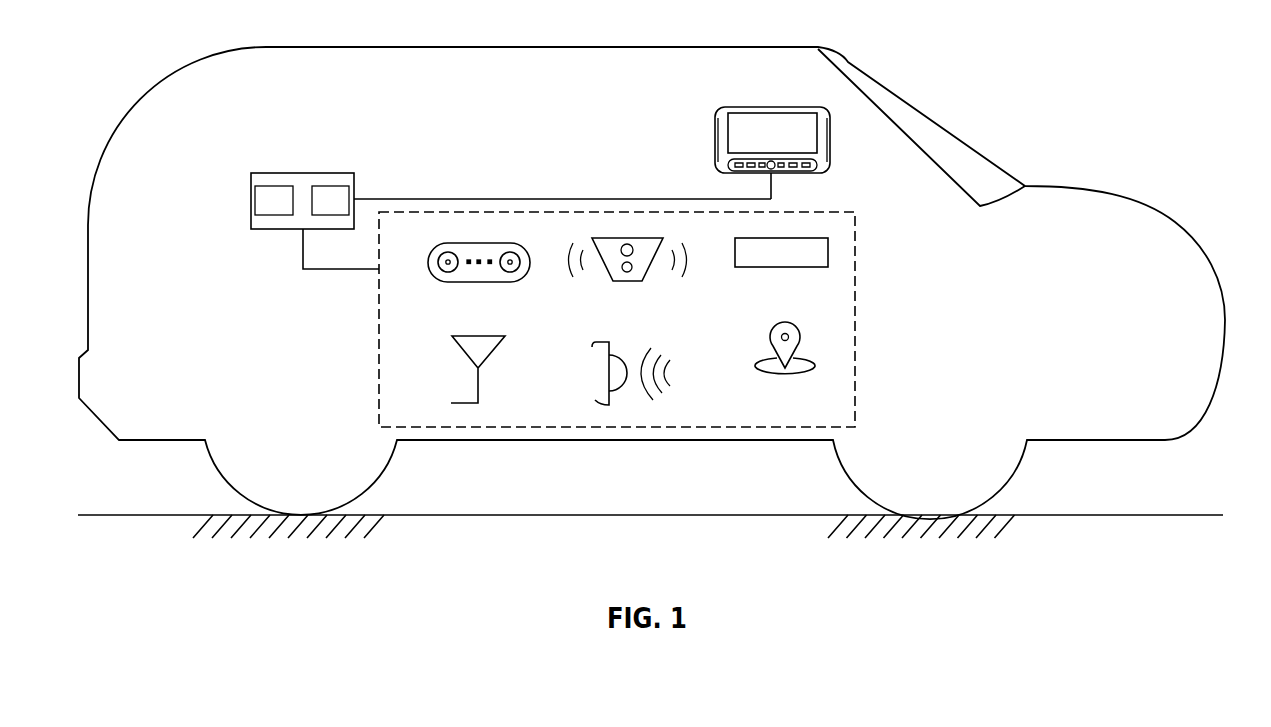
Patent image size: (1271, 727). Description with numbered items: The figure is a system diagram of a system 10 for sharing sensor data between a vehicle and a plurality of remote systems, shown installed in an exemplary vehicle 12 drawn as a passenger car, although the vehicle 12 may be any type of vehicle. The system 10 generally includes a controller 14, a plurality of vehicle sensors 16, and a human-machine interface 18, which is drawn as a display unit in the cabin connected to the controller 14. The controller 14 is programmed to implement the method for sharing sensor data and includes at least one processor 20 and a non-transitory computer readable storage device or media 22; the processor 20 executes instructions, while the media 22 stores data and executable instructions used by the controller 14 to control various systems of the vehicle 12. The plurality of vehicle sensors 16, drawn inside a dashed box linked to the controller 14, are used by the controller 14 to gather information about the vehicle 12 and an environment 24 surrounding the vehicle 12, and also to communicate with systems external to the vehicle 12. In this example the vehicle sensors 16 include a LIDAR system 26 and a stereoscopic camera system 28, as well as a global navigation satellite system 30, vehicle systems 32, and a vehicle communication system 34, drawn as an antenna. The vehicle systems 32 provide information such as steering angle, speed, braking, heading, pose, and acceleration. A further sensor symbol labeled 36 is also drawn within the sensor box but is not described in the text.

The system 10 is at (652, 283).
The vehicle 12 is at (157, 88).
The controller 14 is at (506, 226).
The plurality of vehicle sensors 16 is at (379, 337).
The human-machine interface 18 is at (778, 133).
The processor 20 is at (263, 211).
The non-transitory computer readable storage device or media 22 is at (319, 211).
The environment 24 is at (1110, 104).
The LIDAR system 26 is at (642, 282).
The stereoscopic camera system 28 is at (477, 283).
The global navigation satellite system 30 is at (757, 367).
The vehicle systems 32 is at (795, 264).
The vehicle communication system 34 is at (490, 352).
The microphone 36 is at (602, 342).